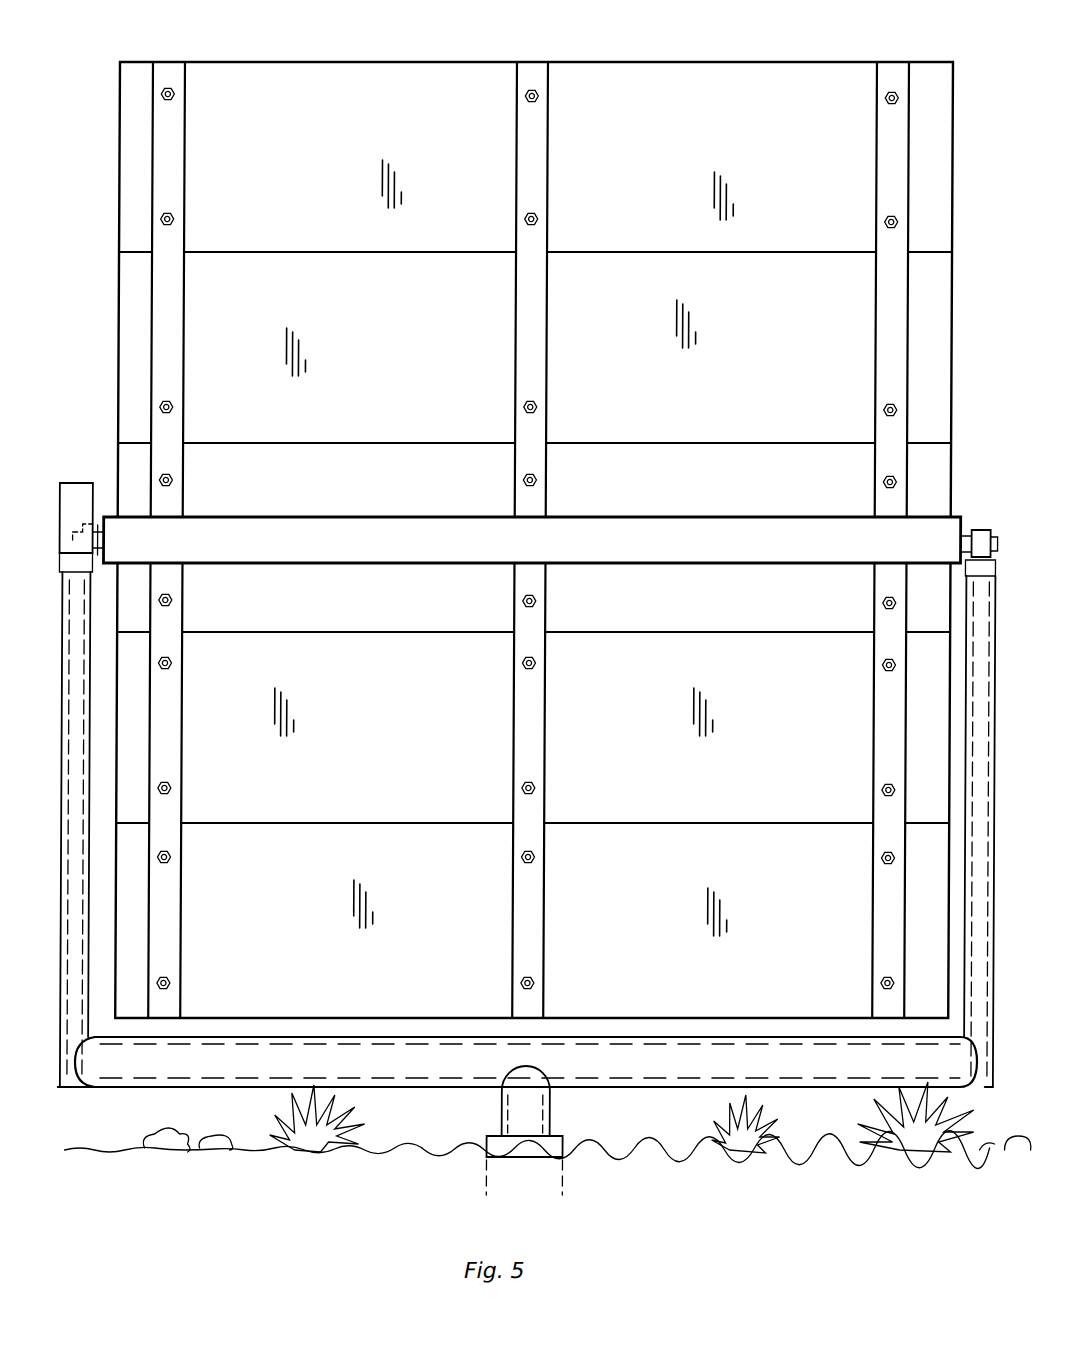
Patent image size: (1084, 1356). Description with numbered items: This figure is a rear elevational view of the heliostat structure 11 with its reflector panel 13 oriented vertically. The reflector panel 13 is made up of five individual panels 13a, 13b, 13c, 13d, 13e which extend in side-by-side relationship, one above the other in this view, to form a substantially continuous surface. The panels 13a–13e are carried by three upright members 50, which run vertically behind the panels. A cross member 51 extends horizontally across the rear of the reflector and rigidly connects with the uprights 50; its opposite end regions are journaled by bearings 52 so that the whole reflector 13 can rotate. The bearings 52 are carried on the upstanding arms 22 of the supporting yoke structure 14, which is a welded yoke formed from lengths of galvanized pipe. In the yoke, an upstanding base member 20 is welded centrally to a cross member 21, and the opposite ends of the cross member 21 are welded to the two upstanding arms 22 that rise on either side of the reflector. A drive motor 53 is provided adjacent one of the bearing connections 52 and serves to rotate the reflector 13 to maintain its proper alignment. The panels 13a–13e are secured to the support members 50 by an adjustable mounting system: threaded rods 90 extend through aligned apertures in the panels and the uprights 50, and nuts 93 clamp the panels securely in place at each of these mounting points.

The heliostat structure 11 is at (132, 1130).
The reflector panel 13 is at (614, 62).
The individual panel 13a is at (936, 141).
The individual panel 13b is at (935, 312).
The individual panel 13c is at (943, 482).
The individual panel 13d is at (945, 727).
The individual panel 13e is at (941, 917).
The supporting yoke structure 14 is at (556, 1108).
The upstanding base member 20 is at (520, 1108).
The cross member 21 is at (678, 1068).
The upstanding arm 22 is at (80, 942).
The upright member 50 is at (178, 180).
The cross member 51 is at (340, 518).
The bearing 52 is at (98, 520).
The drive motor 53 is at (78, 483).
The threaded rod 90 is at (172, 478).
The nut 93 is at (171, 481).